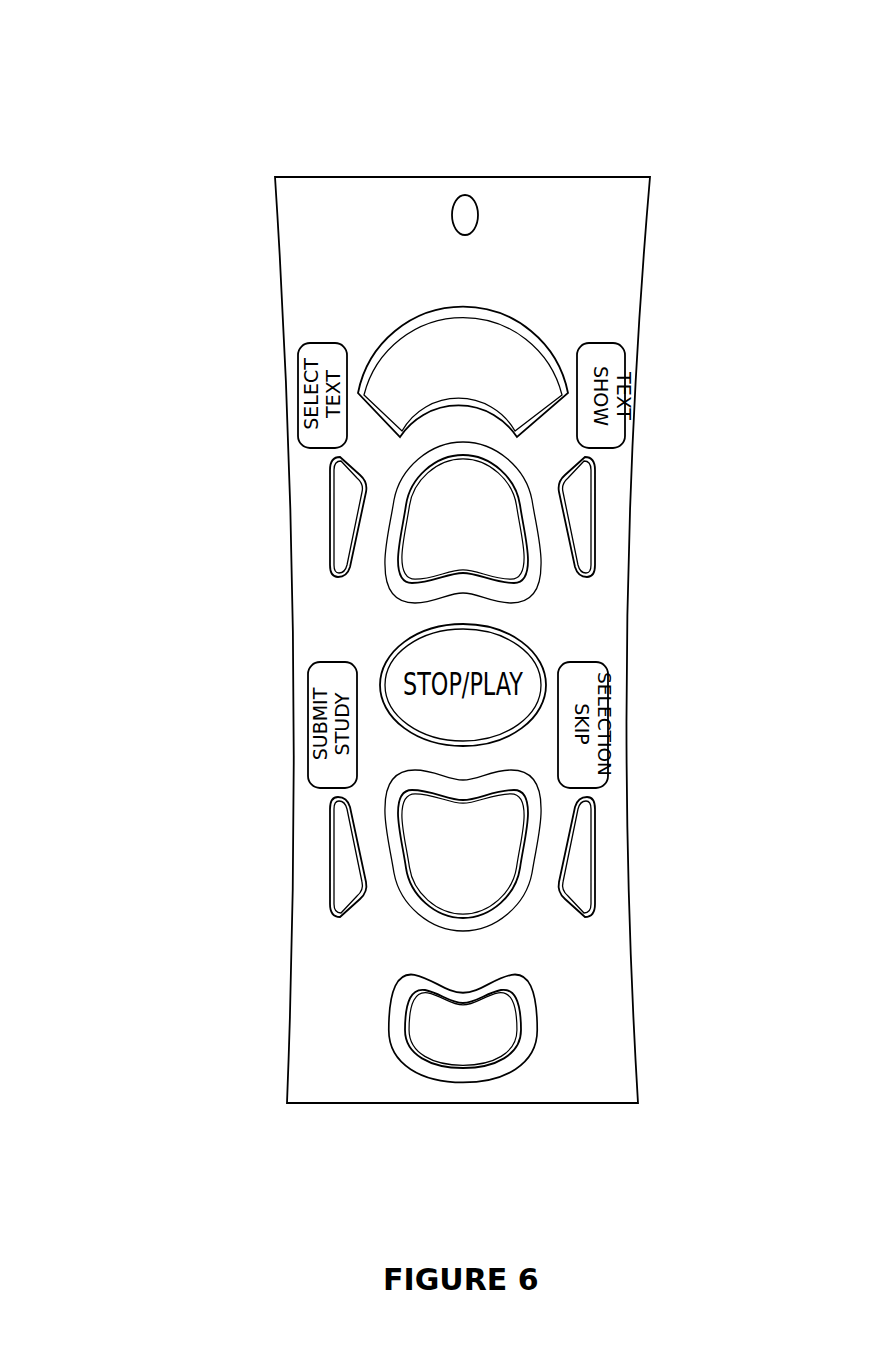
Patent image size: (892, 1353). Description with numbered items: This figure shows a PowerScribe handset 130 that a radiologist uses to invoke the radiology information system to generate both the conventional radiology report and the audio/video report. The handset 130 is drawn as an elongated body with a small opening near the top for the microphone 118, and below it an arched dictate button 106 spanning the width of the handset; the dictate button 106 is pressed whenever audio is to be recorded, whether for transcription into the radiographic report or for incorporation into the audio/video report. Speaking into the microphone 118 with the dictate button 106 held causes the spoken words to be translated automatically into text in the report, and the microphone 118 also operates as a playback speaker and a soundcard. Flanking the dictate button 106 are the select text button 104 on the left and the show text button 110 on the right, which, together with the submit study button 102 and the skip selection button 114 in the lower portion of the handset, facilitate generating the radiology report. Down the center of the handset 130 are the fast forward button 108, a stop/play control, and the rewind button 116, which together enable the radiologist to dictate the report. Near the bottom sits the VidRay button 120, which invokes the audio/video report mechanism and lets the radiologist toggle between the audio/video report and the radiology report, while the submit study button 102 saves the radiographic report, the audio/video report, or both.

The PowerScribe handset 130 is at (139, 43).
The dictate button 106 is at (462, 197).
The microphone 118 is at (490, 308).
The select text button 104 is at (330, 515).
The show text button 110 is at (597, 517).
The fast forward button 108 is at (527, 580).
The submit study button 102 is at (330, 846).
The skip selection button 114 is at (597, 840).
The rewind button 116 is at (488, 908).
The VidRay button 120 is at (475, 1070).